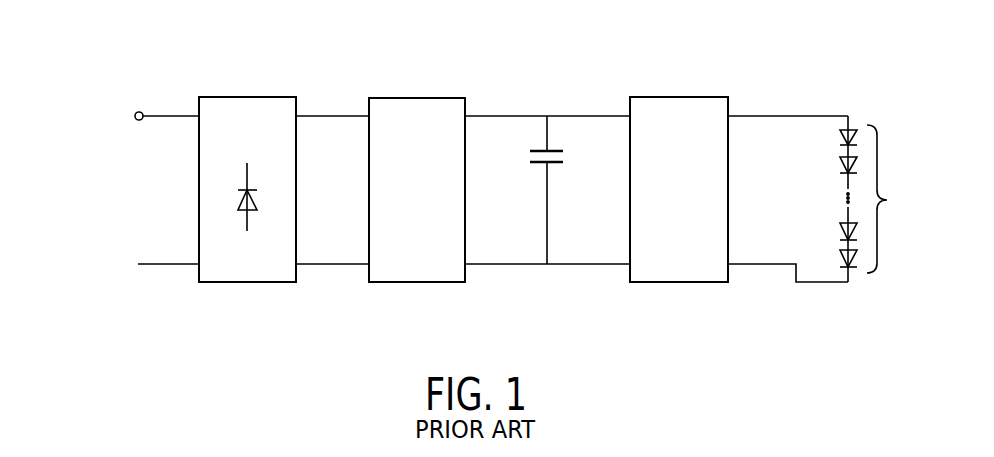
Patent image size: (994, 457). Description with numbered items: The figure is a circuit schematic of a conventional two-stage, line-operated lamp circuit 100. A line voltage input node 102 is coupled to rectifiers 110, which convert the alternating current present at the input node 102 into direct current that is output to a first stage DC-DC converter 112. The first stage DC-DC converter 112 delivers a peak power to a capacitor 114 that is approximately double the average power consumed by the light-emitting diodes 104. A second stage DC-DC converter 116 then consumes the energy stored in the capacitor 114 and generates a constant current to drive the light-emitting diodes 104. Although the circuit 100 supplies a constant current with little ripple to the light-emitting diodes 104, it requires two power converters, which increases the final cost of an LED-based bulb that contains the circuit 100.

The circuit 100 is at (66, 63).
The line voltage input node 102 is at (141, 112).
The light-emitting diodes 104 is at (879, 199).
The rectifiers 110 is at (245, 97).
The first stage DC-DC converter 112 is at (413, 97).
The capacitor 114 is at (540, 150).
The second stage DC-DC converter 116 is at (677, 97).